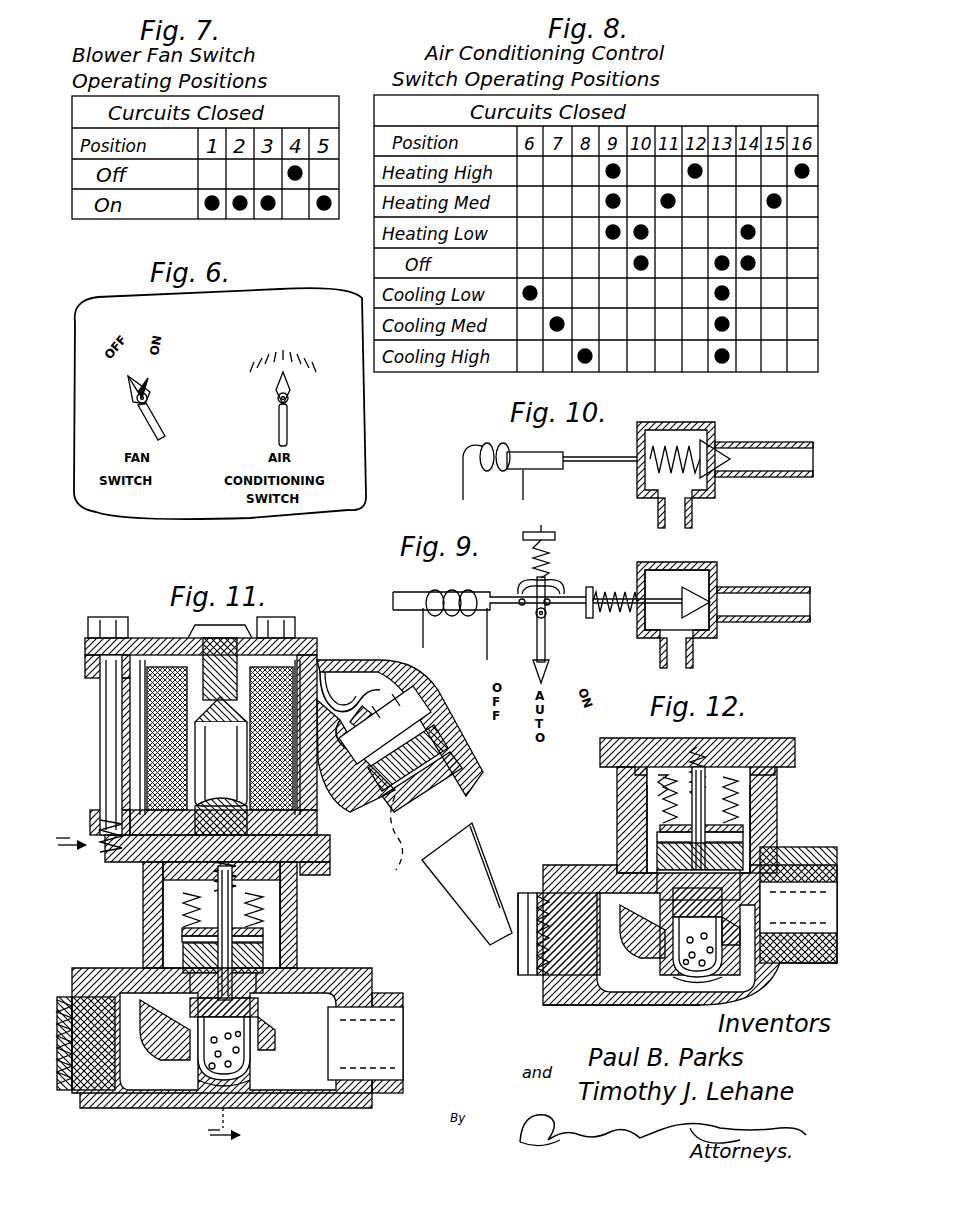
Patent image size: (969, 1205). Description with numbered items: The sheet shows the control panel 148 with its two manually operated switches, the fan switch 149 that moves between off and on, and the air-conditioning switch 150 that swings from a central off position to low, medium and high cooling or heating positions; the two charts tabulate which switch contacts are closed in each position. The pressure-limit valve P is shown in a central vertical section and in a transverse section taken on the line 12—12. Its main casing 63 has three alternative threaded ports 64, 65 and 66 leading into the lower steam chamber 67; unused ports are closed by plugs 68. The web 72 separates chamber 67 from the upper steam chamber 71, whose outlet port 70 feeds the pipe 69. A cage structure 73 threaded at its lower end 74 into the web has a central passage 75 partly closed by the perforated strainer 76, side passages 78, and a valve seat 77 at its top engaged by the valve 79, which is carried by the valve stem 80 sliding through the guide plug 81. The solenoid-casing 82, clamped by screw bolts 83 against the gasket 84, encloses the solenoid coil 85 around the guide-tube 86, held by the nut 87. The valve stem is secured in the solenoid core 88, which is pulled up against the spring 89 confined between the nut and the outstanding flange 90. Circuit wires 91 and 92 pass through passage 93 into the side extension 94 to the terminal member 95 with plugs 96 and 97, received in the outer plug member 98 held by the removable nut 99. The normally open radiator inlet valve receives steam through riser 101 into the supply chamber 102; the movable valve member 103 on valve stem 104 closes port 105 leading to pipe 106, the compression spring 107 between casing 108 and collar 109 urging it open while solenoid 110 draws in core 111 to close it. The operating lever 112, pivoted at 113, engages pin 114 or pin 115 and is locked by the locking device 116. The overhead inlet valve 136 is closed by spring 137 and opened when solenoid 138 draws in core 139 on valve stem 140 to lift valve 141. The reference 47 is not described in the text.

In FIG. 11, the section line 12— 12 is at (148, 990).
In FIG. 11, the outlet conduit 47 is at (404, 1078).
In FIG. 11, the main casing 63 is at (295, 940).
In FIG. 12, the main casing 63 is at (622, 812).
In FIG. 11, the threaded port 64 is at (92, 1105).
In FIG. 11, the threaded port 65 is at (372, 1110).
In FIG. 11, the threaded port 66 is at (215, 1096).
In FIG. 12, the threaded port 66 is at (560, 1008).
In FIG. 11, the steam chamber 67 is at (272, 1108).
In FIG. 12, the steam chamber 67 is at (662, 958).
In FIG. 11, the plug 68 is at (72, 1090).
In FIG. 12, the plug 68 is at (535, 975).
In FIG. 12, the pipe 69 is at (833, 960).
In FIG. 12, the outlet port 70 is at (772, 958).
In FIG. 11, the upper steam chamber 71 is at (163, 960).
In FIG. 12, the upper steam chamber 71 is at (752, 827).
In FIG. 11, the web 72 is at (178, 1040).
In FIG. 12, the web 72 is at (655, 940).
In FIG. 11, the cage structure 73 is at (216, 950).
In FIG. 12, the cage structure 73 is at (690, 862).
In FIG. 11, the lower end of cage 74 is at (200, 1078).
In FIG. 12, the lower end of cage 74 is at (690, 980).
In FIG. 11, the central passage 75 is at (262, 1012).
In FIG. 12, the central passage 75 is at (720, 920).
In FIG. 11, the perforated strainer 76 is at (214, 1080).
In FIG. 12, the perforated strainer 76 is at (692, 977).
In FIG. 11, the valve seat 77 is at (196, 1028).
In FIG. 12, the valve seat 77 is at (672, 925).
In FIG. 11, the open passages 78 is at (255, 990).
In FIG. 12, the open passages 78 is at (660, 880).
In FIG. 11, the valve 79 is at (258, 982).
In FIG. 12, the valve 79 is at (698, 884).
In FIG. 11, the valve stem 80 is at (183, 938).
In FIG. 12, the valve stem 80 is at (735, 842).
In FIG. 11, the guide plug 81 is at (185, 912).
In FIG. 12, the guide plug 81 is at (740, 808).
In FIG. 11, the solenoid-casing 82 is at (320, 835).
In FIG. 11, the screw bolts 83 is at (88, 692).
In FIG. 11, the gasket 84 is at (322, 852).
In FIG. 11, the solenoid coil 85 is at (145, 714).
In FIG. 11, the guide-tube 86 is at (192, 740).
In FIG. 11, the nut 87 is at (285, 876).
In FIG. 12, the nut 87 is at (655, 742).
In FIG. 11, the solenoid core 88 is at (200, 780).
In FIG. 12, the solenoid core 88 is at (700, 745).
In FIG. 11, the spring 89 is at (210, 895).
In FIG. 12, the spring 89 is at (658, 790).
In FIG. 11, the outstanding flange 90 is at (262, 930).
In FIG. 12, the outstanding flange 90 is at (658, 828).
In FIG. 11, the circuit wire 91 is at (345, 690).
In FIG. 11, the circuit wire 92 is at (372, 672).
In FIG. 11, the passage 93 is at (322, 660).
In FIG. 11, the side extension 94 is at (432, 692).
In FIG. 11, the electric terminal member 95 is at (410, 700).
In FIG. 11, the plug 96 is at (455, 752).
In FIG. 11, the plug 97 is at (402, 842).
In FIG. 11, the outer electric plug member 98 is at (472, 826).
In FIG. 11, the removable nut 99 is at (462, 786).
In FIG. 11, the pressure-limit valve P is at (285, 915).
In FIG. 12, the pressure-limit valve P is at (618, 840).
In FIG. 9, the riser 101 is at (694, 658).
In FIG. 9, the steam supply chamber 102 is at (696, 572).
In FIG. 9, the movable valve member 103 is at (705, 596).
In FIG. 9, the valve stem 104 is at (584, 605).
In FIG. 9, the port 105 is at (725, 616).
In FIG. 9, the pipe 106 is at (790, 622).
In FIG. 9, the compression spring 107 is at (627, 620).
In FIG. 9, the casing 108 is at (642, 563).
In FIG. 9, the collar 109 is at (596, 590).
In FIG. 9, the solenoid 110 is at (480, 592).
In FIG. 9, the core 111 is at (393, 585).
In FIG. 9, the operating lever 112 is at (537, 640).
In FIG. 9, the pivot 113 is at (536, 615).
In FIG. 9, the pin 114 is at (555, 590).
In FIG. 9, the pin 115 is at (518, 598).
In FIG. 9, the spring actuated locking device 116 is at (550, 548).
In FIG. 10, the inlet valve 136 is at (660, 424).
In FIG. 10, the spring 137 is at (655, 472).
In FIG. 10, the solenoid 138 is at (487, 457).
In FIG. 10, the core 139 is at (557, 470).
In FIG. 10, the valve stem 140 is at (600, 457).
In FIG. 10, the valve 141 is at (718, 448).
In FIG. 6, the control panel 148 is at (358, 417).
In FIG. 6, the fan switch 149 is at (152, 410).
In FIG. 6, the air-conditioning switch 150 is at (276, 412).